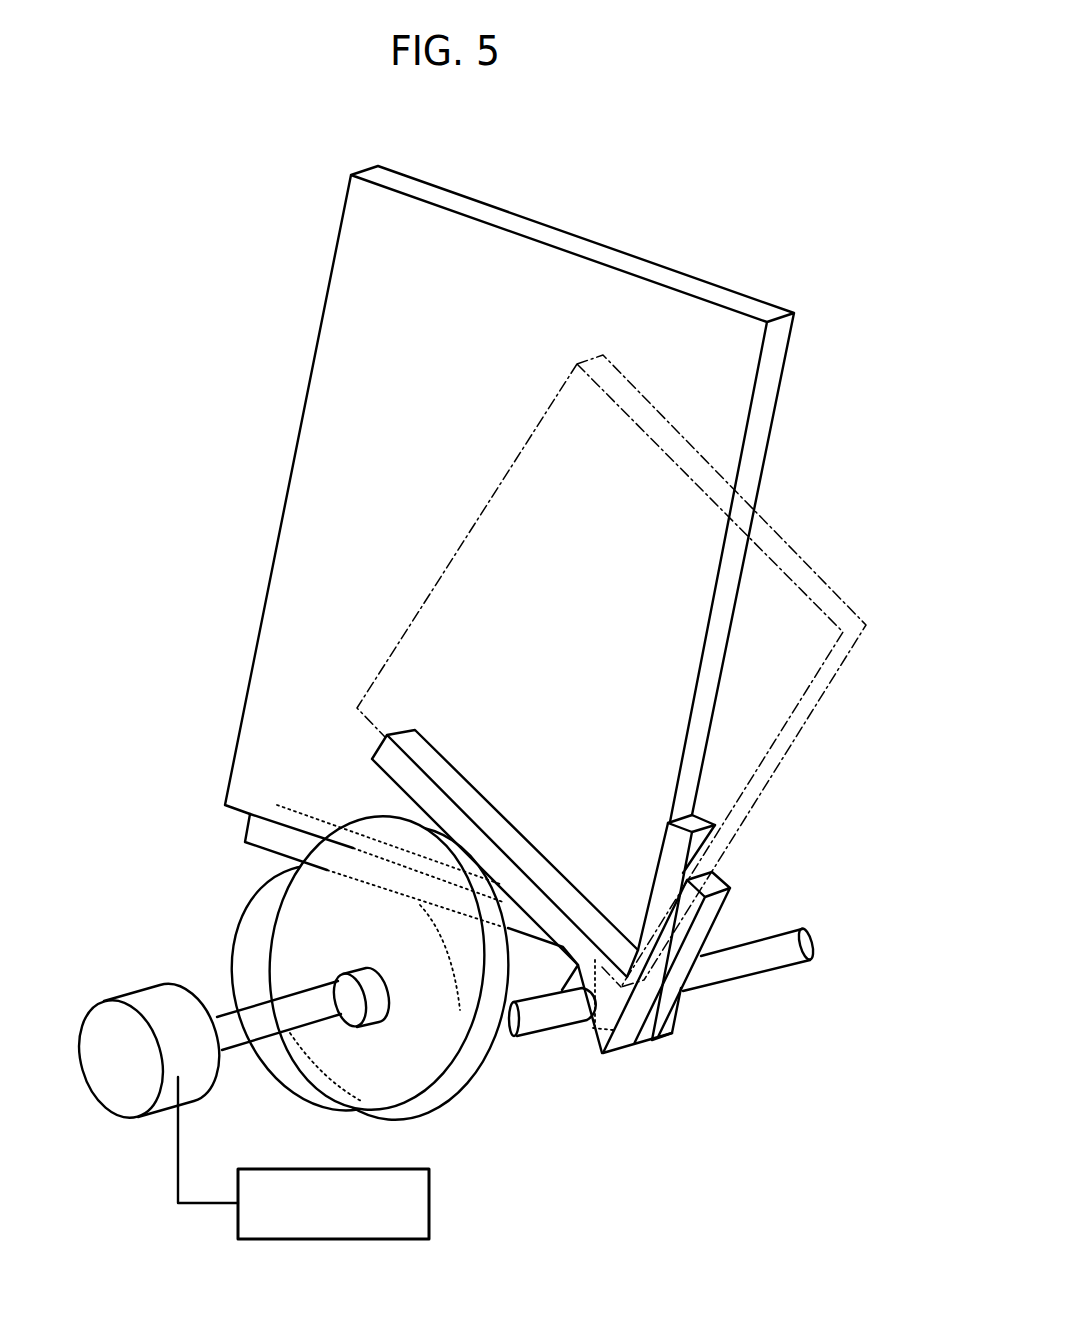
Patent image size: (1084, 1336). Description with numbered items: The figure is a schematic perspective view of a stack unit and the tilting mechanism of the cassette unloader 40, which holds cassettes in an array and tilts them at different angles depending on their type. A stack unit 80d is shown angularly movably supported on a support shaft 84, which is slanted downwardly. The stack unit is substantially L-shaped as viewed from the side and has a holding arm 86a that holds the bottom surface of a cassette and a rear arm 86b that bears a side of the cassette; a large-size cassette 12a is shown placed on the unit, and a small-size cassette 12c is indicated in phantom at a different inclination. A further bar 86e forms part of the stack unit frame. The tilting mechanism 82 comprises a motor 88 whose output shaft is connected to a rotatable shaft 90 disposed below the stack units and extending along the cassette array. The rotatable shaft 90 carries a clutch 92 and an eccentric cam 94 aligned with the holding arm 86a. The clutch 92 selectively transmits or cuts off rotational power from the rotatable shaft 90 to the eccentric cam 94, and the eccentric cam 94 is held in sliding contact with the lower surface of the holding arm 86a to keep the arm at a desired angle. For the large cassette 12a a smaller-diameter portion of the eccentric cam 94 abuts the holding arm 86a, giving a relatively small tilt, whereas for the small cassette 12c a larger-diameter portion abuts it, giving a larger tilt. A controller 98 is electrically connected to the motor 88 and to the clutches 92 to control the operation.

The cassette unloader 40 is at (500, 702).
The cassette of the large size 12a is at (589, 291).
The cassette of the small size 12c is at (796, 548).
The stack unit 80d is at (712, 815).
The tilting mechanism 82 is at (293, 1020).
The support shaft 84 is at (545, 1027).
The holding arm 86a is at (450, 782).
The rear arm 86b is at (760, 913).
The diagonal support bar 86e is at (727, 878).
The motor 88 is at (157, 997).
The rotatable shaft 90 is at (232, 1018).
The clutch 92 is at (357, 973).
The eccentric cam 94 is at (237, 917).
The controller 98 is at (428, 1193).